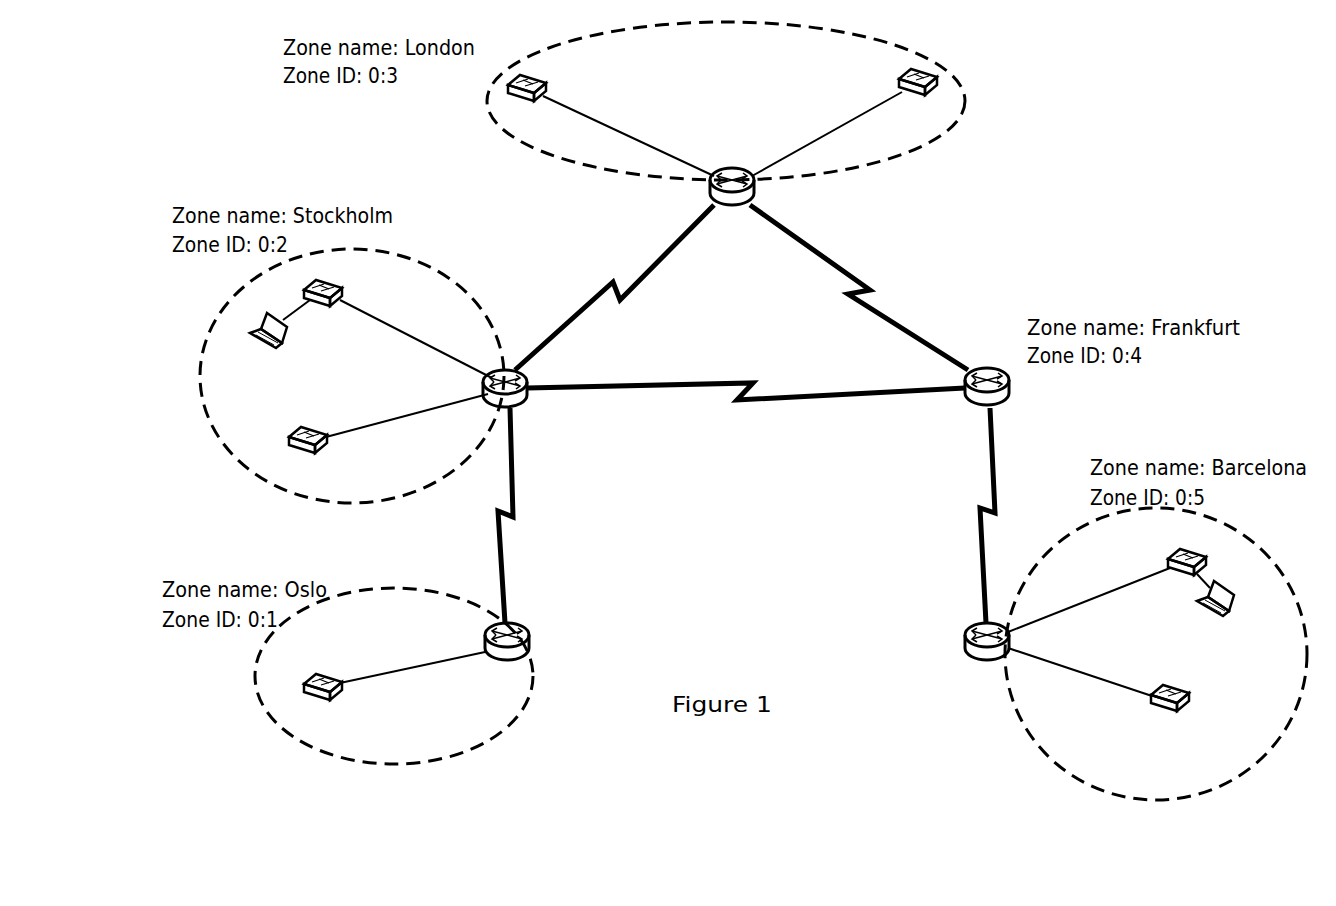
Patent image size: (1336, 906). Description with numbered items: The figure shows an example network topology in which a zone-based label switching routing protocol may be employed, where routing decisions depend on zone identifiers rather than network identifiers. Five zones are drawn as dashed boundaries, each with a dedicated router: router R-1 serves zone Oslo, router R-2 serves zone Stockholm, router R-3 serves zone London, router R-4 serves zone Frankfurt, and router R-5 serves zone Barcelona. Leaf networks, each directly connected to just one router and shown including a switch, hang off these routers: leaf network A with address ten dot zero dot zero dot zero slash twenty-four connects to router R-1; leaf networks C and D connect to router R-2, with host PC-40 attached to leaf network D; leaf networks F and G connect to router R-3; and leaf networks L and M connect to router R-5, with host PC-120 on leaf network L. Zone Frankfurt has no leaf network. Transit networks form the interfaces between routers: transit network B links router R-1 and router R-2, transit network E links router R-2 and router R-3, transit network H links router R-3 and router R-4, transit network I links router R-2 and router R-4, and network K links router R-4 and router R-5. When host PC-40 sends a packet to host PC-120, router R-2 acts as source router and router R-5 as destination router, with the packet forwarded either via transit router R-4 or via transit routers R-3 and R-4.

The router R-1 is at (507, 652).
The router R-2 is at (513, 396).
The router R-3 is at (730, 206).
The router R-4 is at (976, 392).
The router R-5 is at (987, 649).
The leaf network A is at (417, 704).
The transit network B is at (586, 486).
The leaf network C is at (399, 452).
The leaf network D is at (423, 287).
The transit network E is at (585, 254).
The leaf network F is at (628, 86).
The leaf network G is at (808, 86).
The transit network H is at (927, 254).
The transit network I is at (752, 349).
The transit network K is at (922, 486).
The leaf network L is at (1109, 549).
The leaf network M is at (1163, 747).
The host PC-40 is at (270, 354).
The host PC-120 is at (1215, 626).